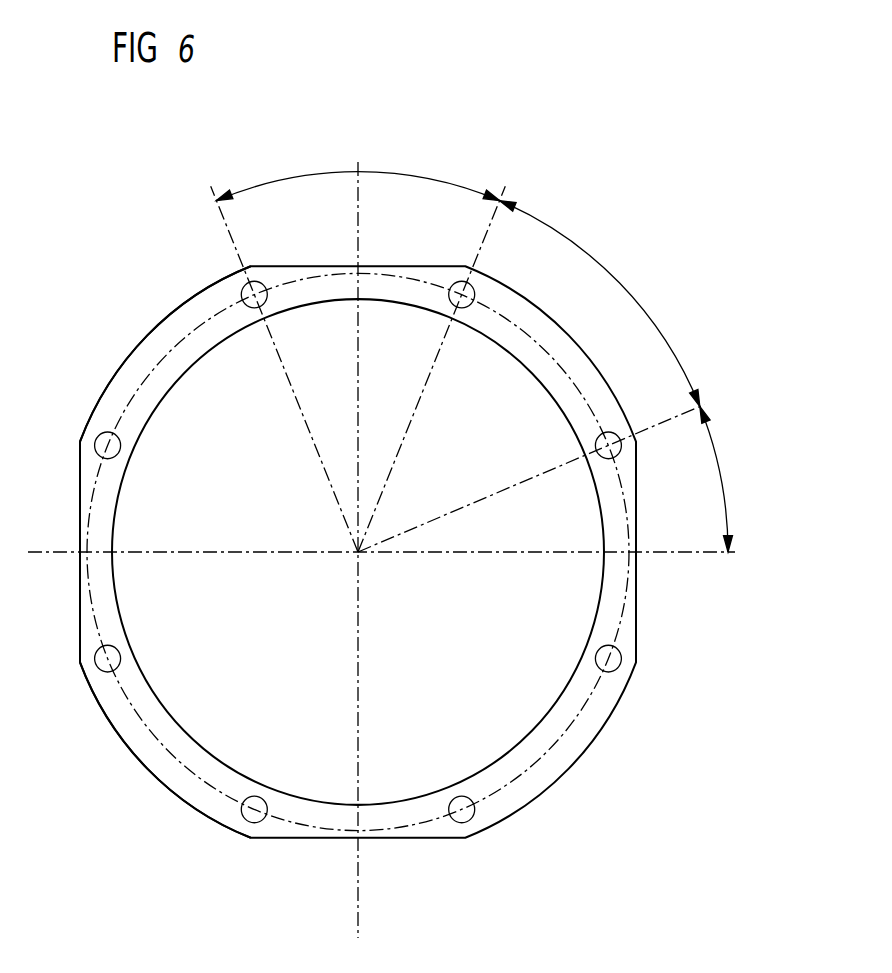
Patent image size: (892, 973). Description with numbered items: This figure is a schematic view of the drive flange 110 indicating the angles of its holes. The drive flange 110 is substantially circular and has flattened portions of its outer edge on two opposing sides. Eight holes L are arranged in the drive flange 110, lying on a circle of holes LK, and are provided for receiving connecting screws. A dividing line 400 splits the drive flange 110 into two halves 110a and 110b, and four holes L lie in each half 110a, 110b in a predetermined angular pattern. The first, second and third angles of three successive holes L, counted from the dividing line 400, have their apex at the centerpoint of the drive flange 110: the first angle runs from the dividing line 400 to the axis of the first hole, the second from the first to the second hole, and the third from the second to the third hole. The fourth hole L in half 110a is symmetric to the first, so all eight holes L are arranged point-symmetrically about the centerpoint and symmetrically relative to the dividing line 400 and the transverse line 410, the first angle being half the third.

The drive flange 110 is at (552, 768).
The half of the drive flange 110a is at (118, 408).
The half of the drive flange 110b is at (120, 698).
The holes L is at (246, 287).
The circle of holes LK is at (202, 782).
The dividing line 400 is at (698, 552).
The transverse line 410 is at (362, 923).